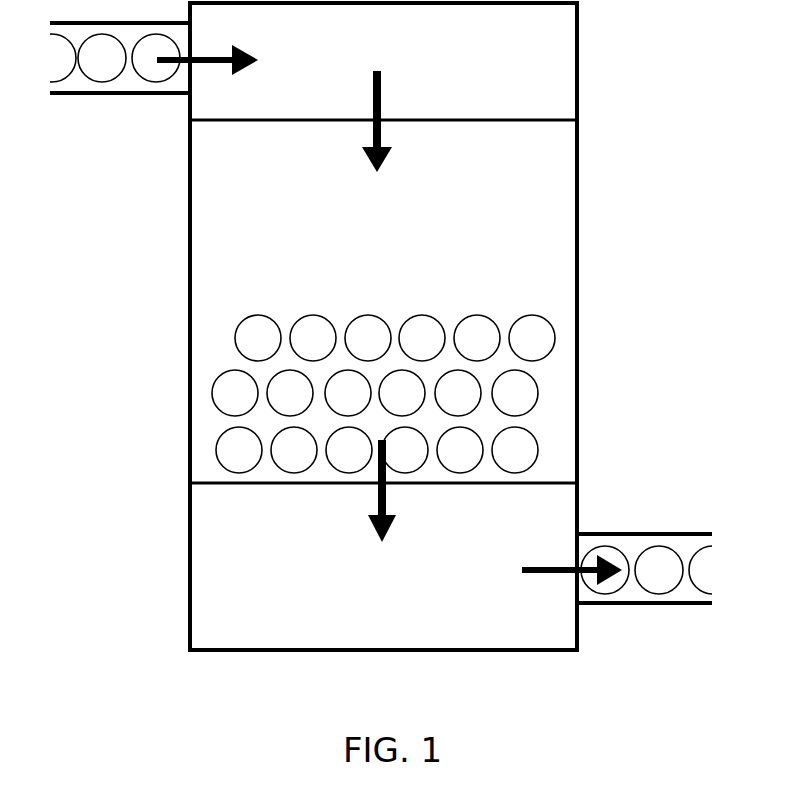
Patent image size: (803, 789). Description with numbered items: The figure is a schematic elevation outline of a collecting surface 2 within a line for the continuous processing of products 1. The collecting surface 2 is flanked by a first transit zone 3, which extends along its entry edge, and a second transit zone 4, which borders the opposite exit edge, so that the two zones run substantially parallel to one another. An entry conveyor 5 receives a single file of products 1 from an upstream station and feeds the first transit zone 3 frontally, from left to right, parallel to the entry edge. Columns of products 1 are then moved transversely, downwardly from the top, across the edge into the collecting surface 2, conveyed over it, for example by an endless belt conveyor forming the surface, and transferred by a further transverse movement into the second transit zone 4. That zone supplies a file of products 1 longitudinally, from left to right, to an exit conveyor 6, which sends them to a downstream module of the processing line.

The products 1 is at (537, 336).
The collecting surface 2 is at (183, 318).
The first transit zone 3 is at (607, 0).
The second transit zone 4 is at (158, 485).
The entry conveyor 5 is at (102, 99).
The exit conveyor 6 is at (663, 530).